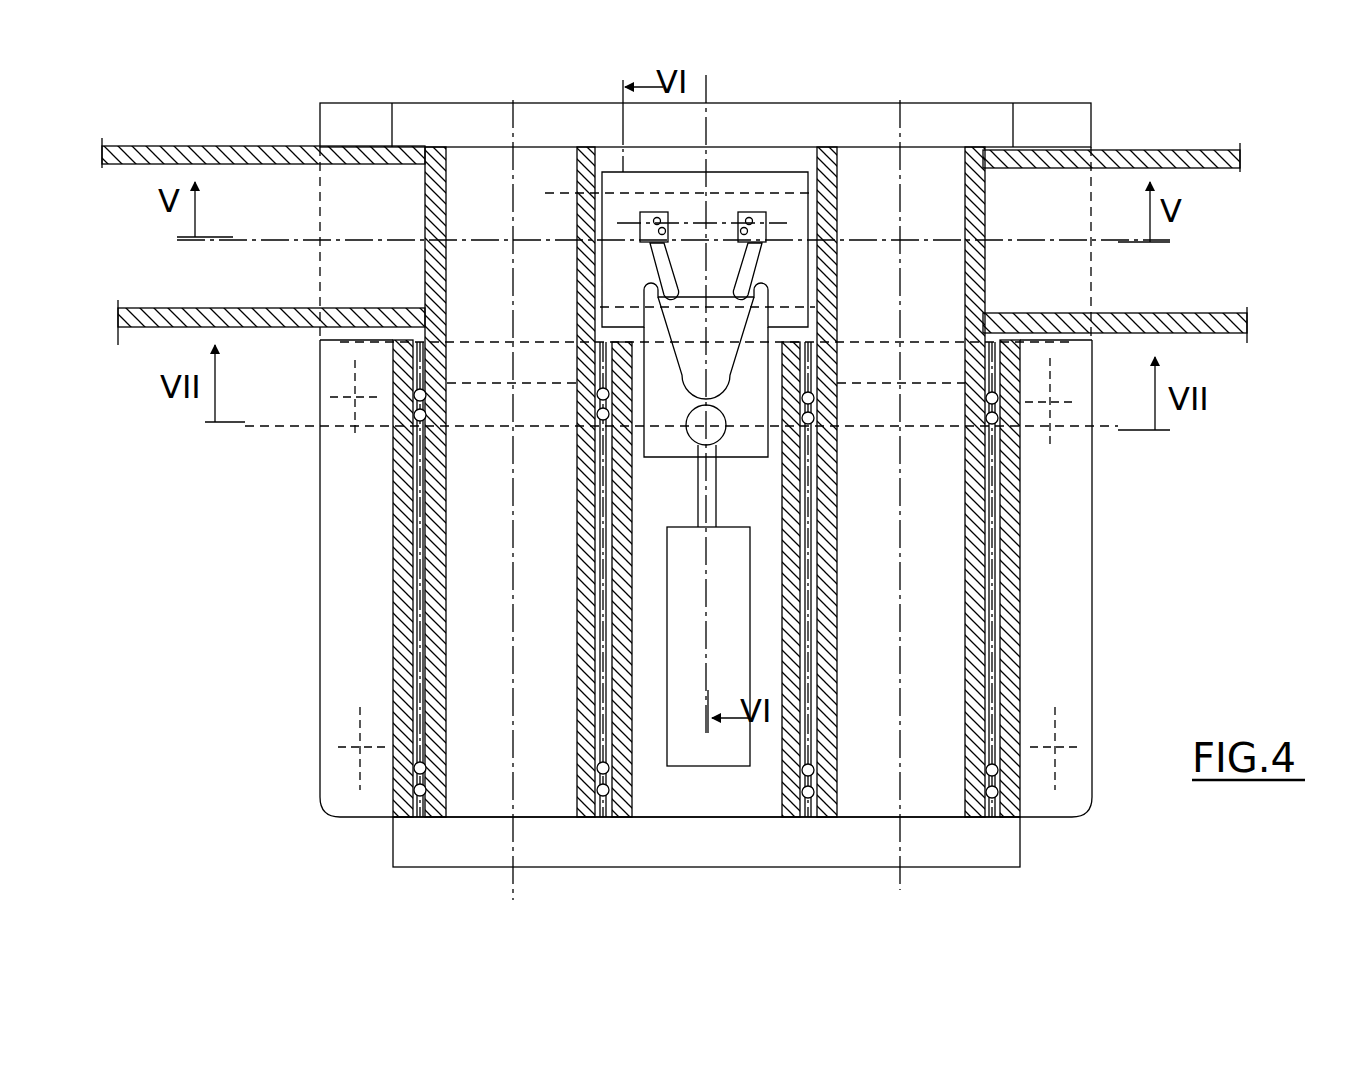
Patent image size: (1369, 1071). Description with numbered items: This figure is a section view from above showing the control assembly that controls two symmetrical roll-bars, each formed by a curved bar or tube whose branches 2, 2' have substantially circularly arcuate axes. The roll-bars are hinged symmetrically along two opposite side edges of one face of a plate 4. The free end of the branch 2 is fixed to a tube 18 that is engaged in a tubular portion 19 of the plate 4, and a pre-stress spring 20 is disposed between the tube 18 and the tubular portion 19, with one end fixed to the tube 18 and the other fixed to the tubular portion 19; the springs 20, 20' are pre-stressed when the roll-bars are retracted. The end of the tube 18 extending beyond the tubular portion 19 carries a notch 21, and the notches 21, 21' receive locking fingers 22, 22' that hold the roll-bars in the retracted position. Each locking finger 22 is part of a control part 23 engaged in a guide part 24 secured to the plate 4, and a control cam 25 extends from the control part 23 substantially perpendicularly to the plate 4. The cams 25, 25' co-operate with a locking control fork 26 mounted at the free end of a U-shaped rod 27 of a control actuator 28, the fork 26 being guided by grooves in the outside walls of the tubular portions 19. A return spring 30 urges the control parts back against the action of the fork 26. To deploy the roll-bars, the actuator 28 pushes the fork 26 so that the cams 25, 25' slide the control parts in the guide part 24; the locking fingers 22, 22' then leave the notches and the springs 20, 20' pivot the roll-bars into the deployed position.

The branch 2 is at (263, 323).
The branch 2' is at (1115, 210).
The plate 4 is at (1040, 597).
The tube 18 is at (433, 177).
The tubular portion 19 is at (400, 560).
The pre-stress spring 20 is at (341, 579).
The pre-stress spring 20' is at (1086, 579).
The notch 21 is at (583, 424).
The notch 21' is at (849, 424).
The locking finger 22 is at (572, 424).
The locking finger 22' is at (884, 424).
The control part 23 is at (615, 208).
The guide part 24 is at (675, 213).
The control cam 25 is at (572, 271).
The control cam 25' is at (846, 271).
The locking control fork 26 is at (650, 325).
The U-shaped rod 27 is at (698, 490).
The control actuator 28 is at (686, 740).
The return spring 30 is at (732, 183).